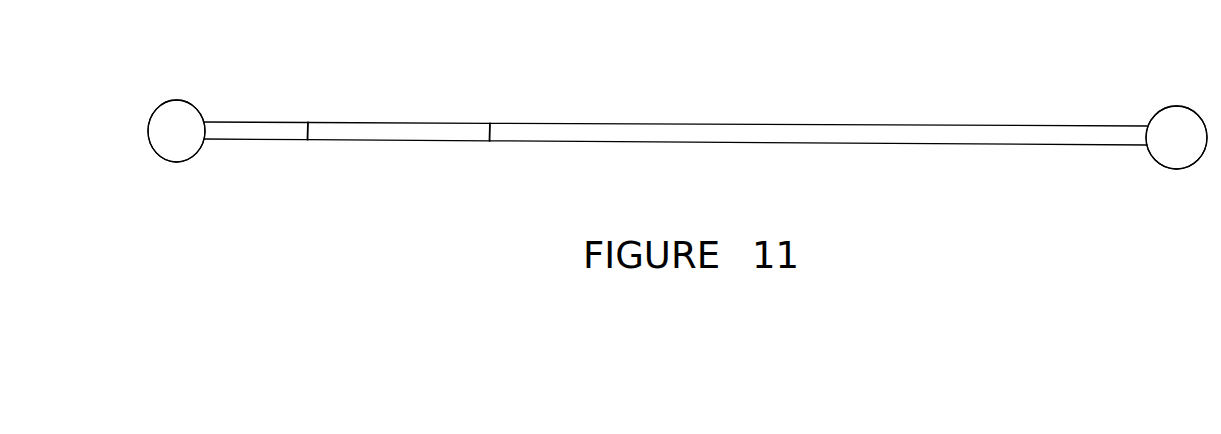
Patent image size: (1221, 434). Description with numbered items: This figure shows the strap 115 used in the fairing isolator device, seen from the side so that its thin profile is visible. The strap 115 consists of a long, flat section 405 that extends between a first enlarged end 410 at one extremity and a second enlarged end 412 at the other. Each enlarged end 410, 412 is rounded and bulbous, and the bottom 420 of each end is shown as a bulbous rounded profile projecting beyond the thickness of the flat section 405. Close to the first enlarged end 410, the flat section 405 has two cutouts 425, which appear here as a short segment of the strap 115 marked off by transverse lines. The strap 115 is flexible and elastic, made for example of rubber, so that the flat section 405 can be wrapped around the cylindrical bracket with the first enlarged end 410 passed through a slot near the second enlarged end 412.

The strap 115 is at (258, 118).
The flat section 405 is at (564, 120).
The cutouts 425 is at (383, 145).
The bottom 420 is at (177, 90).
The first enlarged end 410 is at (178, 165).
The second enlarged end 412 is at (1178, 172).